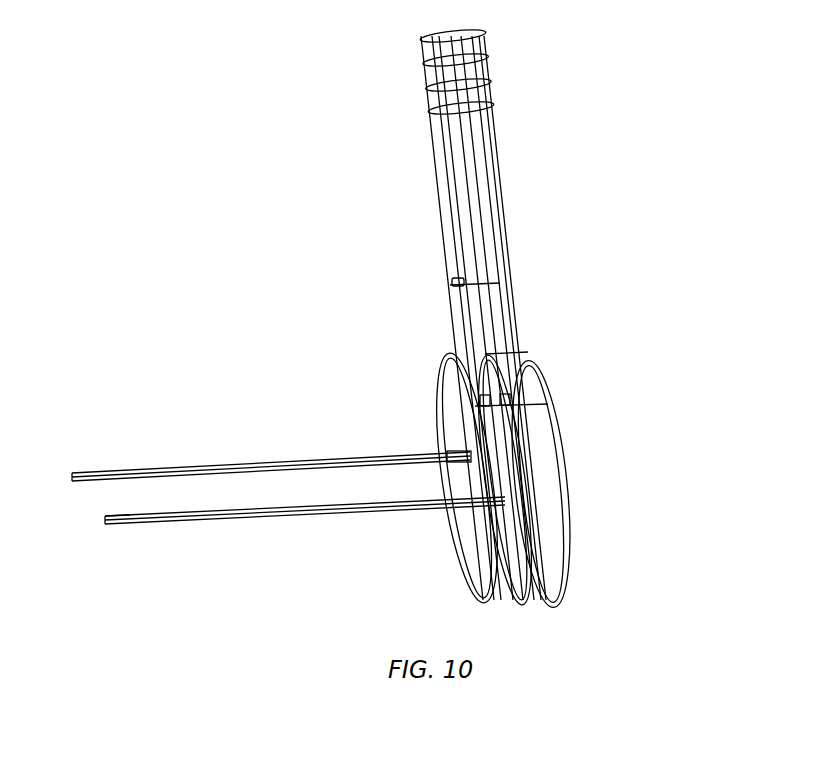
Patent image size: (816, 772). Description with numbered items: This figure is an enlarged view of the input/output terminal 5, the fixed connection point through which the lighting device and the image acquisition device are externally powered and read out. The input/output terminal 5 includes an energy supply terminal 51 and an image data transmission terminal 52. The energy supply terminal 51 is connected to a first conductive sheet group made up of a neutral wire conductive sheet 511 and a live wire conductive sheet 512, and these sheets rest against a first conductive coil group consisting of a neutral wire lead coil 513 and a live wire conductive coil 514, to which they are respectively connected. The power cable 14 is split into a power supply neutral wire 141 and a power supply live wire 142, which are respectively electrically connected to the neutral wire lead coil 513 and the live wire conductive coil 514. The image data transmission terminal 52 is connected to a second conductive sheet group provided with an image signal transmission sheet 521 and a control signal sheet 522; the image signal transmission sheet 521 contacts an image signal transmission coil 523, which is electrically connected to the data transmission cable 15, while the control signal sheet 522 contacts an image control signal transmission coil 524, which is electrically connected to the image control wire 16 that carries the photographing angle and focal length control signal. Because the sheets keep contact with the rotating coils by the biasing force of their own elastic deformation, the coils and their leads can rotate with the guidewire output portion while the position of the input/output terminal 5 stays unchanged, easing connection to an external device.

The input/output terminal 5 is at (553, 145).
The energy supply terminal 51 is at (425, 100).
The image data transmission terminal 52 is at (492, 96).
The neutral wire conductive sheet 511 is at (462, 328).
The live wire conductive sheet 512 is at (468, 288).
The neutral wire lead coil 513 is at (500, 510).
The live wire conductive coil 514 is at (522, 562).
The image signal transmission sheet 521 is at (503, 290).
The control signal sheet 522 is at (515, 318).
The image signal transmission coil 523 is at (545, 475).
The image control signal transmission coil 524 is at (553, 428).
The power cable 14 is at (417, 348).
The power supply neutral wire 141 is at (295, 463).
The power supply live wire 142 is at (468, 455).
The data transmission cable 15 is at (220, 518).
The image control wire 16 is at (107, 520).